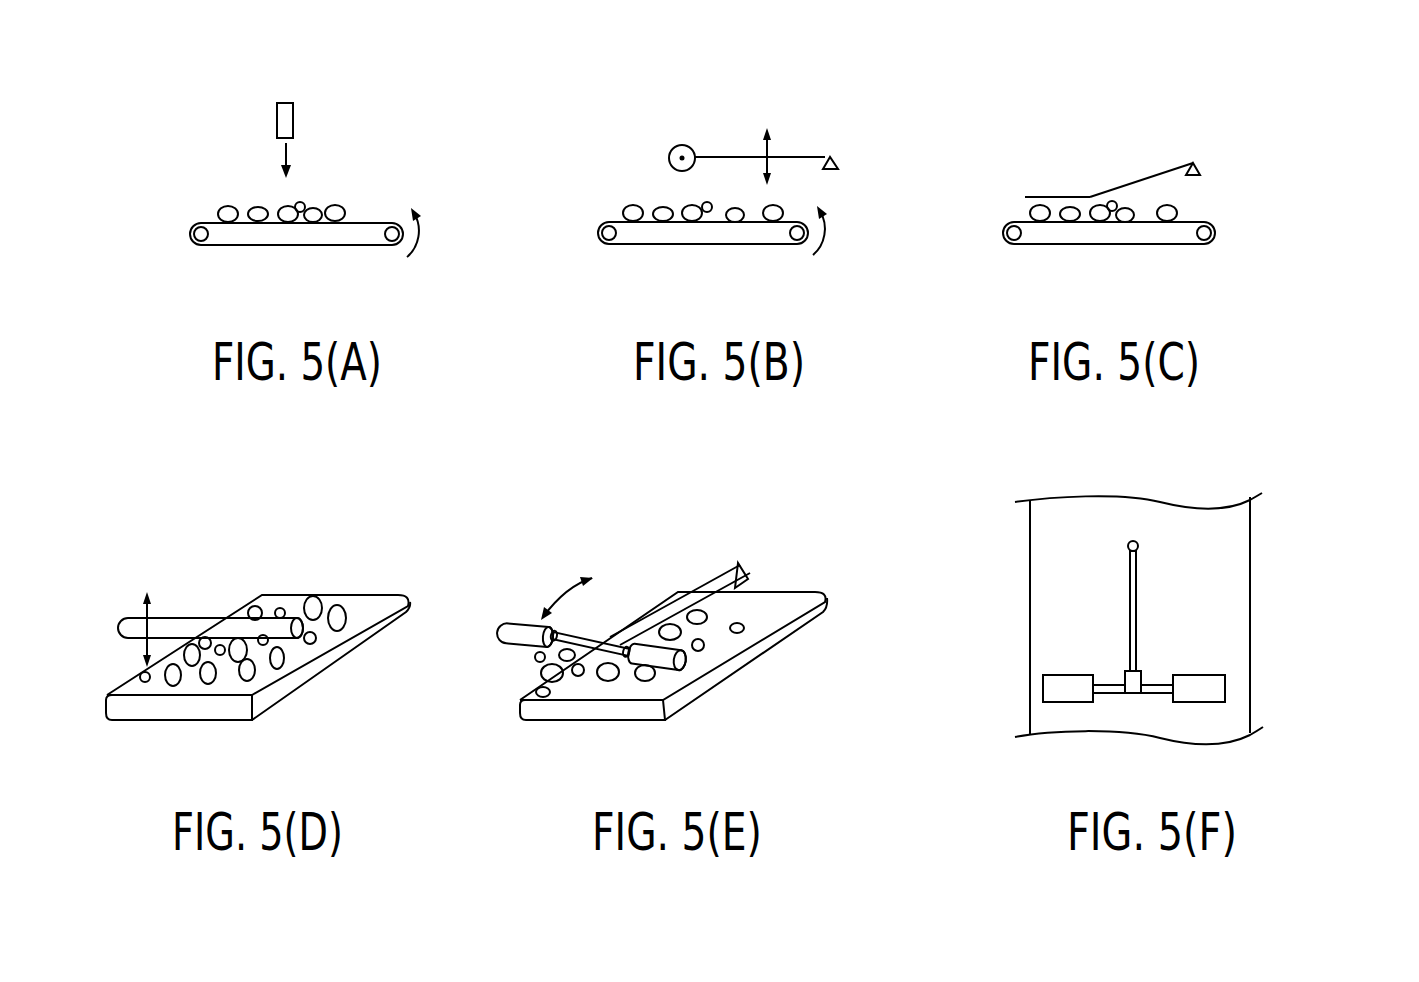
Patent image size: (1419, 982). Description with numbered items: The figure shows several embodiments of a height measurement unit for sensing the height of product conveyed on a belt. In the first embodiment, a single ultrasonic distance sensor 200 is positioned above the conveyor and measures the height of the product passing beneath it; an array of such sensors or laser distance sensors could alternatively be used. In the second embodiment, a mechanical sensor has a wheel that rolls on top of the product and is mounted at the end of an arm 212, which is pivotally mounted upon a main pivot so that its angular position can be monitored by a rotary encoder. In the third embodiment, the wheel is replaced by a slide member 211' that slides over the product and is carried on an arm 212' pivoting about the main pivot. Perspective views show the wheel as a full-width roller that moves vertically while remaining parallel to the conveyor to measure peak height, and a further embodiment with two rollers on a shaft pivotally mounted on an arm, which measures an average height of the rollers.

The ultrasonic distance sensor 200 is at (313, 94).
The arm 212 is at (760, 116).
The slide member 211' is at (1046, 159).
The arm 212' is at (1141, 152).